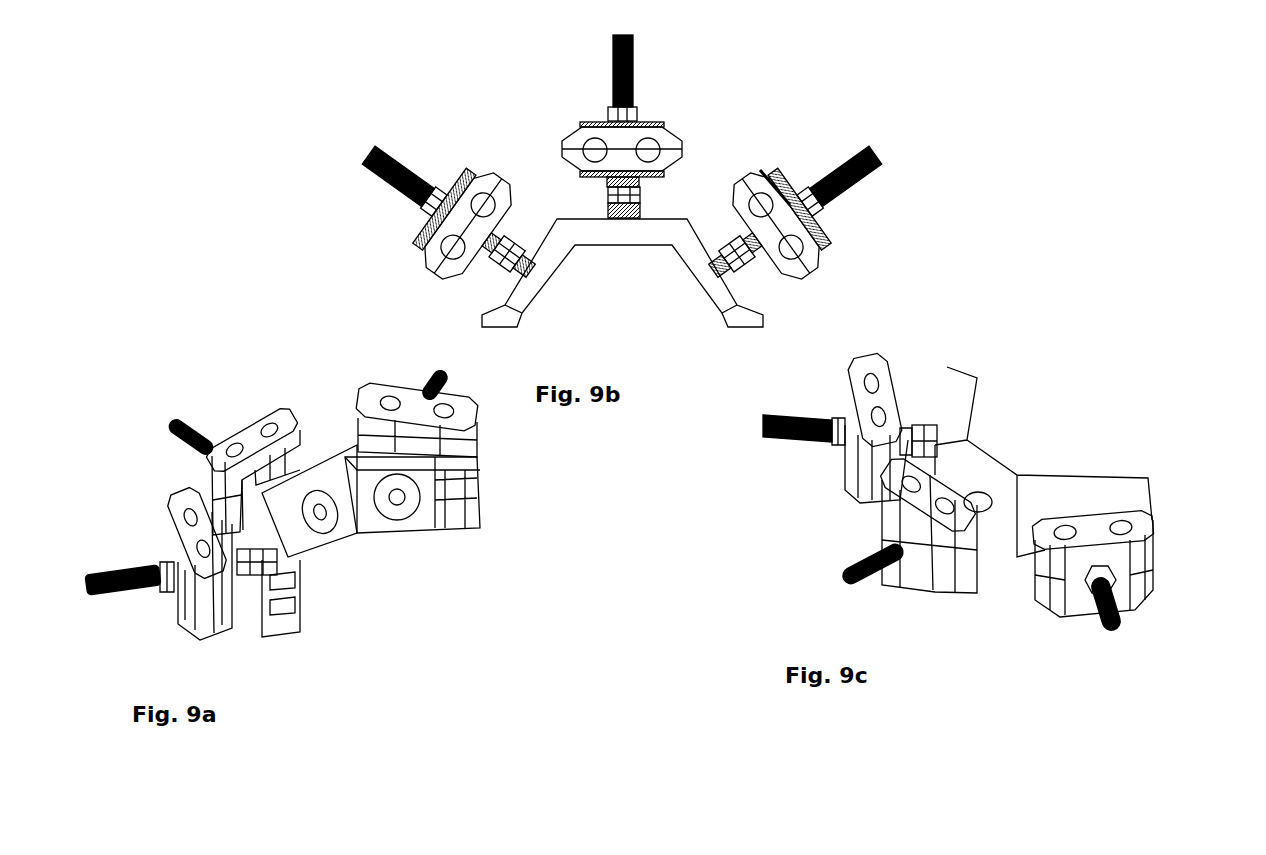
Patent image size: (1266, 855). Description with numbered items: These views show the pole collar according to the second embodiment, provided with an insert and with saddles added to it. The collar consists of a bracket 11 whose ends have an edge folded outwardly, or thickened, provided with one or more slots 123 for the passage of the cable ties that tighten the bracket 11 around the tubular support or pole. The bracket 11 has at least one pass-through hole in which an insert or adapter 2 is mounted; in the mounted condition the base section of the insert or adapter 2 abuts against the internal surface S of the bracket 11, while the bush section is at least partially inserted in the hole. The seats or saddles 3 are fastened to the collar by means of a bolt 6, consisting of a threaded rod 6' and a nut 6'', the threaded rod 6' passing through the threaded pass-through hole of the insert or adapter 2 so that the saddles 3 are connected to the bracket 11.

In FIG. 9A, the internal surface S is at (347, 530).
In FIG. 9A, the insert or adapter 2 is at (393, 522).
In FIG. 9B, the seat/saddle 3 is at (478, 185).
In FIG. 9A, the seat/saddle 3 is at (227, 428).
In FIG. 9C, the seat/saddle 3 is at (1156, 582).
In FIG. 9C, the bolt 6 is at (812, 493).
In FIG. 9B, the threaded rod 6' is at (905, 121).
In FIG. 9B, the nut 6'' is at (733, 125).
In FIG. 9B, the bracket 11 is at (698, 271).
In FIG. 9A, the bracket 11 is at (347, 533).
In FIG. 9C, the bracket 11 is at (1083, 470).
In FIG. 9A, the slot 123 is at (458, 535).